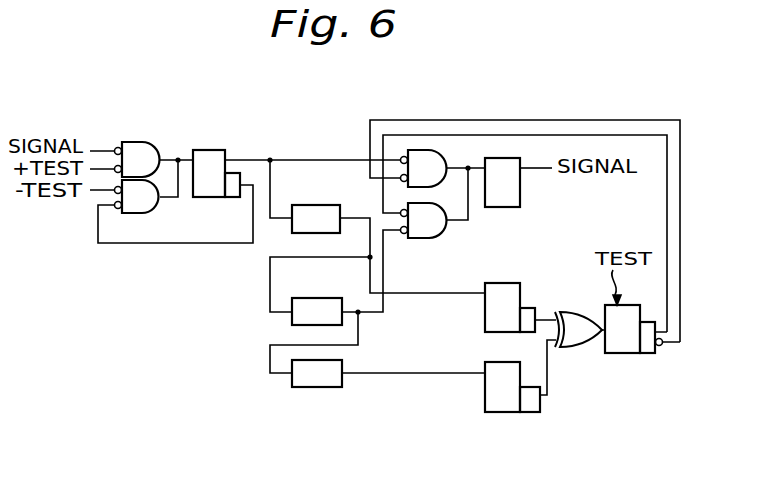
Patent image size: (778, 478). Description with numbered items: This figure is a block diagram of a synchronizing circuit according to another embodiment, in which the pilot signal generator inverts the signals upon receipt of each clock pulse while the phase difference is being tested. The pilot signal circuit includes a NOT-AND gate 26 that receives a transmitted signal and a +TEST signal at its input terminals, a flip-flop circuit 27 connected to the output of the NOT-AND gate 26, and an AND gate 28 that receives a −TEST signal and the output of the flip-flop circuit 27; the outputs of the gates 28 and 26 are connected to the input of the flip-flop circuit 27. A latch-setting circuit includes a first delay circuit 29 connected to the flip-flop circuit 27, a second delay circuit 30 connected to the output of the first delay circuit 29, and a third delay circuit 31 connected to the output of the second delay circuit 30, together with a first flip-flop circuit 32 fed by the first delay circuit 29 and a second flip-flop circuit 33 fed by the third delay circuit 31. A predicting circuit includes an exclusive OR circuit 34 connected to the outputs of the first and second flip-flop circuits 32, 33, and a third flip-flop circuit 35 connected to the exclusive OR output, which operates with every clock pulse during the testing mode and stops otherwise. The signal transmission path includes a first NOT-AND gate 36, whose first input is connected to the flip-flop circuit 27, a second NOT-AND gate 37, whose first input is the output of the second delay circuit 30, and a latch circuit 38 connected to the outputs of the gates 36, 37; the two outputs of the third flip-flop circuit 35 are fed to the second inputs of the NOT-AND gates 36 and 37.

The NOT-AND gate 26 is at (146, 142).
The flip-flop circuit 27 is at (220, 150).
The AND gate 28 is at (143, 213).
The first delay circuit 29 is at (312, 205).
The second delay circuit 30 is at (318, 298).
The third delay circuit 31 is at (317, 388).
The first flip-flop circuit 32 is at (513, 283).
The second flip-flop circuit 33 is at (503, 412).
The exclusive OR circuit 34 is at (573, 348).
The third flip-flop circuit 35 is at (633, 357).
The first NOT-AND gate 36 is at (440, 150).
The second NOT-AND gate 37 is at (433, 238).
The latch circuit 38 is at (510, 207).